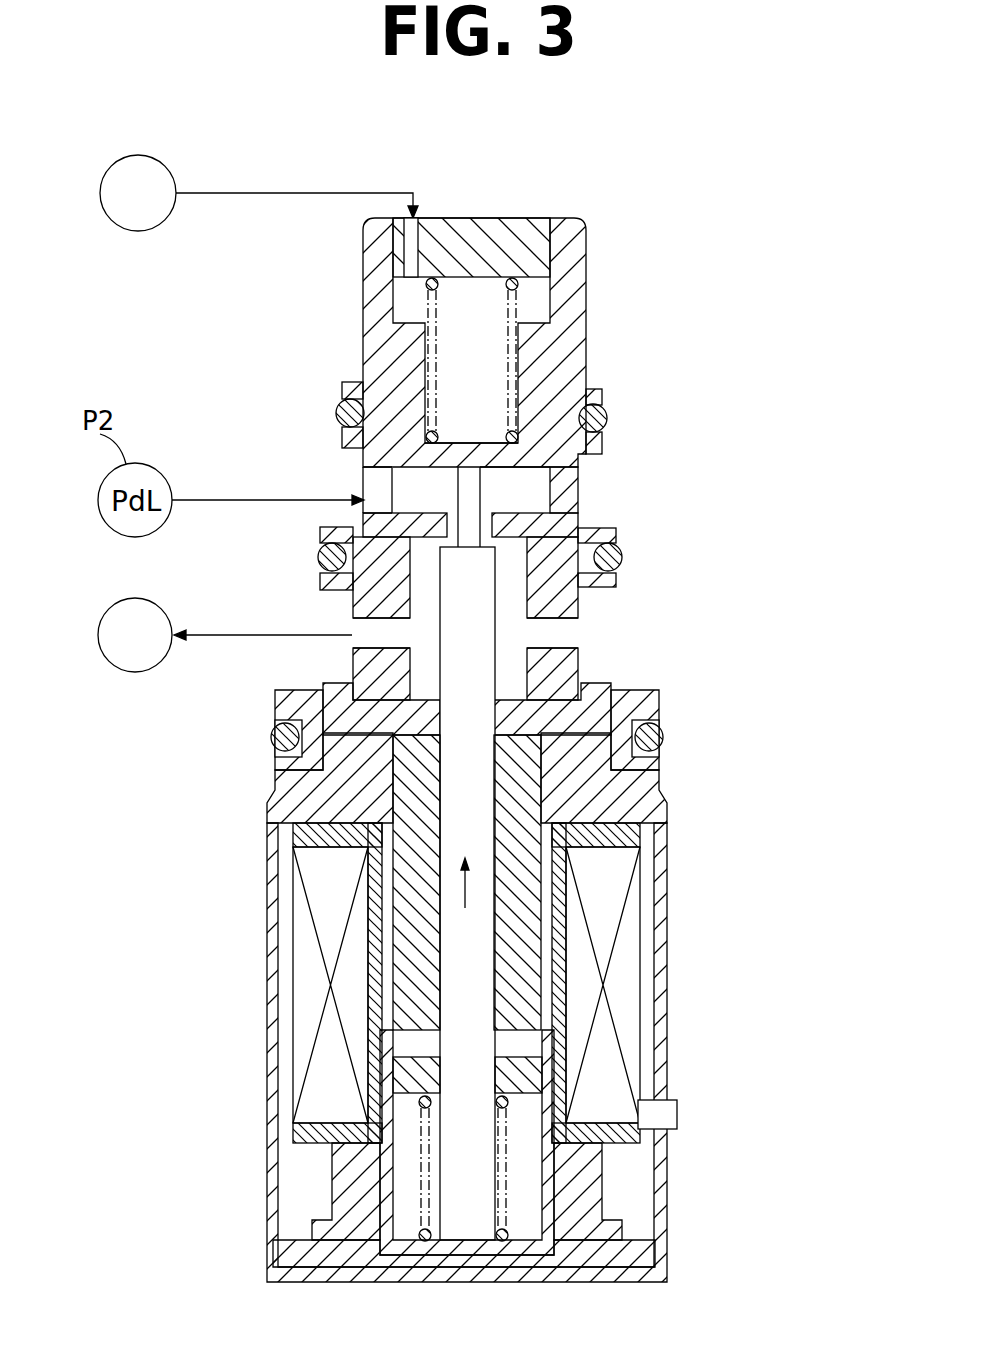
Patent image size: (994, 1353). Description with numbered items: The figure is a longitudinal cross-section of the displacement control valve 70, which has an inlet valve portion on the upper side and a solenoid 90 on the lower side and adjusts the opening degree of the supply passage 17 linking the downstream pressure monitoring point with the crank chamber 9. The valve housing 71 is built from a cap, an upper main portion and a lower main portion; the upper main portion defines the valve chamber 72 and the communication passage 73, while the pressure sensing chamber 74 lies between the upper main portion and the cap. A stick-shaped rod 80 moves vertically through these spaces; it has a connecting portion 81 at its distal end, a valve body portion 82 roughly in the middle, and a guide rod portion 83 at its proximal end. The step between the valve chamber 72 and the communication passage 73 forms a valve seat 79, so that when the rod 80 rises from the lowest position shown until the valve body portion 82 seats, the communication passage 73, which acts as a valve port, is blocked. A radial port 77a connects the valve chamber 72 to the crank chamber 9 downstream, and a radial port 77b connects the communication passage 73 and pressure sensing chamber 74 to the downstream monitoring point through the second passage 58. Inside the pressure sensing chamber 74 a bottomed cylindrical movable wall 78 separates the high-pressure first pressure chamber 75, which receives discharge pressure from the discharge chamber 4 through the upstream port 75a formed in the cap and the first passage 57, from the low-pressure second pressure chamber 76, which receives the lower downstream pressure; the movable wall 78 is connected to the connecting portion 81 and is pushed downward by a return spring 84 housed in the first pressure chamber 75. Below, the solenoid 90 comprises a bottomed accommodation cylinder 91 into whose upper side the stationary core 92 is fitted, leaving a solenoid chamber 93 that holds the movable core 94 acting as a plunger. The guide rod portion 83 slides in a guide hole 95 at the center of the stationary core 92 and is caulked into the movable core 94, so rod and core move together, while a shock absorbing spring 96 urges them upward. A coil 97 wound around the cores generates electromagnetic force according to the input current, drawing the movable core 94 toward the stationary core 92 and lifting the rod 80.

The discharge chamber 4 is at (138, 155).
The crank chamber 9 is at (104, 618).
The supply passage 17 is at (212, 638).
The first passage 57 is at (264, 192).
The second passage 58 is at (215, 502).
The displacement control valve 70 is at (597, 209).
The valve housing 71 is at (460, 218).
The valve chamber 72 is at (525, 648).
The communication passage 73 is at (496, 522).
The pressure sensing chamber 74 is at (558, 300).
The P1 pressure chamber 75 is at (488, 358).
The P1 port 75a is at (400, 252).
The P2 pressure chamber 76 is at (438, 504).
The port 77a is at (356, 638).
The port 77b is at (362, 492).
The movable wall 78 is at (532, 440).
The valve seat 79 is at (340, 534).
The rod 80 is at (481, 710).
The connecting portion 81 is at (480, 488).
The valve body portion 82 is at (480, 568).
The guide rod portion 83 is at (450, 930).
The return spring 84 is at (577, 392).
The solenoid 90 is at (679, 857).
The accommodation cylinder 91 is at (385, 858).
The stationary core 92 is at (395, 805).
The solenoid chamber 93 is at (410, 1052).
The movable core 94 is at (395, 1195).
The guide hole 95 is at (430, 978).
The shock absorbing spring 96 is at (420, 1100).
The coil 97 is at (612, 984).